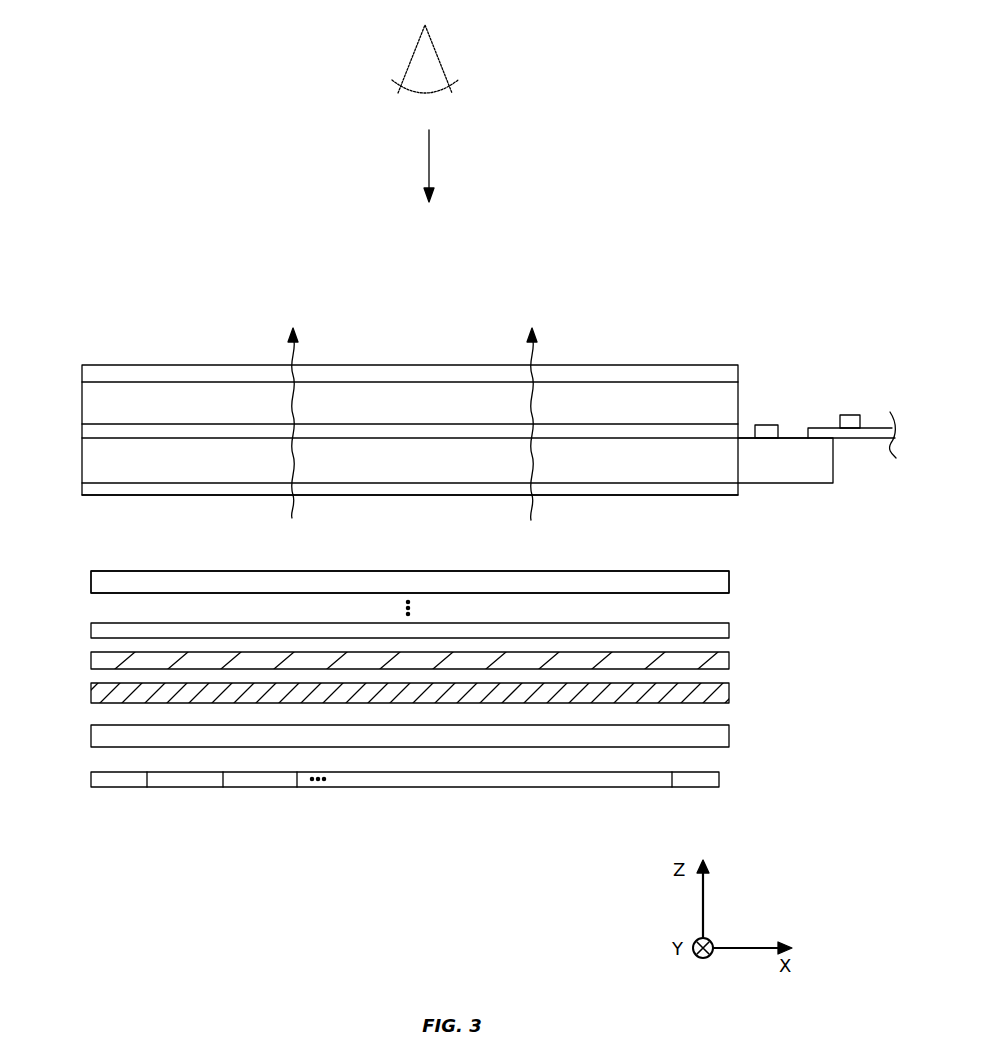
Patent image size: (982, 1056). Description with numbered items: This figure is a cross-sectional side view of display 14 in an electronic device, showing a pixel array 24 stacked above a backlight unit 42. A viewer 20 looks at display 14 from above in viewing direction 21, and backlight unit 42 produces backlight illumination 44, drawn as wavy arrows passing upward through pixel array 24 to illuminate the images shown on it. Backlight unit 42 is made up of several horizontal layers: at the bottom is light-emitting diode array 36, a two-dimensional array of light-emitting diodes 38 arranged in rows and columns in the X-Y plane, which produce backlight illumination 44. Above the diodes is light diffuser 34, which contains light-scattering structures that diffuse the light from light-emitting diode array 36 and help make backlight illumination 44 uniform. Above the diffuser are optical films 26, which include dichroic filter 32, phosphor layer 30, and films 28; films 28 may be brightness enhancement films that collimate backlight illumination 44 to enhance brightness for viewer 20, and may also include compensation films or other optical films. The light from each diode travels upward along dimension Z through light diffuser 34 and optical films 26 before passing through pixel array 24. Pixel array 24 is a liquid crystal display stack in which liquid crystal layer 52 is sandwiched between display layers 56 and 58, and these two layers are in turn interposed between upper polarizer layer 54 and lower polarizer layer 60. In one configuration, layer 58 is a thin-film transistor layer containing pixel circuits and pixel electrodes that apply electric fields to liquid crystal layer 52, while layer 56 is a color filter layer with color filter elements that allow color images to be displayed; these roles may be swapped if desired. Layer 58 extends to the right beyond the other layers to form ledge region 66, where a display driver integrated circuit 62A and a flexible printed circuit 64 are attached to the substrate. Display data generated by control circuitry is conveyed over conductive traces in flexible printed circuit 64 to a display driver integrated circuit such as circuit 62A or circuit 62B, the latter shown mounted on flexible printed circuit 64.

The display 14 is at (738, 268).
The viewer 20 is at (455, 58).
The viewing direction 21 is at (429, 155).
The pixel array 24 is at (73, 365).
The optical films 26 is at (738, 566).
The films 28 is at (142, 630).
The phosphor layer 30 is at (723, 660).
The dichroic filter 32 is at (725, 693).
The light diffuser 34 is at (723, 735).
The light-emitting diode array 36 is at (728, 780).
The light-emitting diodes 38 is at (157, 787).
The backlight unit 42 is at (79, 562).
The backlight illumination 44 is at (298, 344).
The liquid crystal layer 52 is at (406, 433).
The upper polarizer layer 54 is at (145, 372).
The color filter layer 56 is at (200, 392).
The thin-film transistor layer 58 is at (663, 473).
The lower polarizer layer 60 is at (713, 487).
The display driver integrated circuit 62A is at (767, 425).
The display driver integrated circuit 62B is at (852, 415).
The flexible printed circuit 64 is at (866, 432).
The ledge region 66 is at (870, 355).